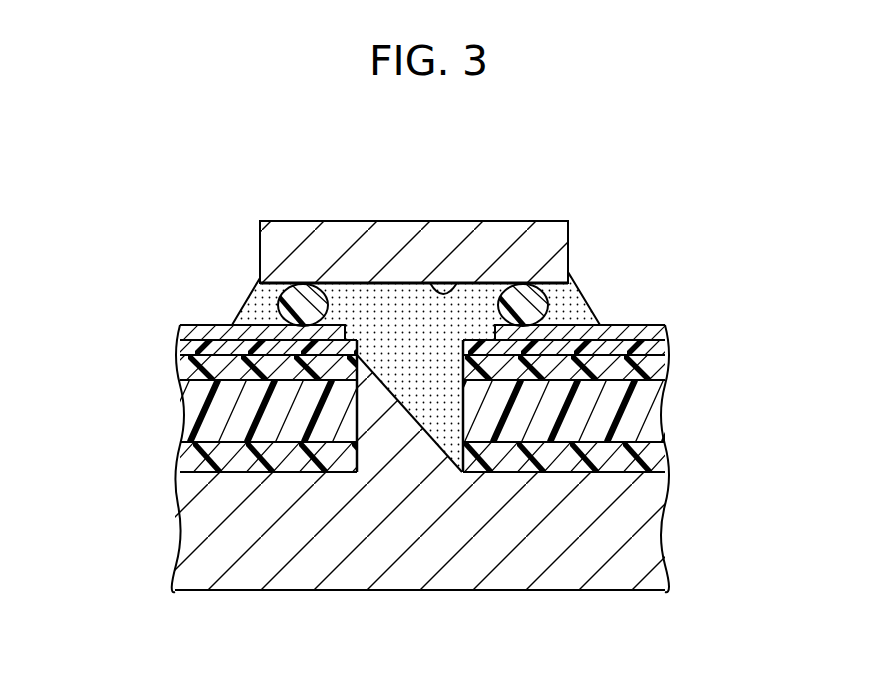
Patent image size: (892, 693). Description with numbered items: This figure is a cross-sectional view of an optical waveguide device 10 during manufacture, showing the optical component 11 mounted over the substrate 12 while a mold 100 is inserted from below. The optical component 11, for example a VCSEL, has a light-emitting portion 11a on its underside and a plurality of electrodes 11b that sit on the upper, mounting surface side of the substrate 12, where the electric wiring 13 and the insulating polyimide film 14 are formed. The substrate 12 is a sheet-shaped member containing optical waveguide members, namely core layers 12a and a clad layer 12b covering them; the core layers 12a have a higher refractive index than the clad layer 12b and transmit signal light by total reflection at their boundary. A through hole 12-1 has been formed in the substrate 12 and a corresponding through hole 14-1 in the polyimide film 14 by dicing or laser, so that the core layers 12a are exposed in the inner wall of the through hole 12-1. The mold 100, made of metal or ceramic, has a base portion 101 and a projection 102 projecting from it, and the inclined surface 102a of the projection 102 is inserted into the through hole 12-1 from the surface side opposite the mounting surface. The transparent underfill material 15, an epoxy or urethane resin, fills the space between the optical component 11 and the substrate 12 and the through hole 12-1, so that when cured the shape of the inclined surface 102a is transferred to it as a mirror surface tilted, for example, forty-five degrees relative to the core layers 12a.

The optical waveguide device 10 is at (149, 452).
The optical component 11 is at (570, 235).
The light-emitting portion 11a is at (457, 283).
The electrodes 11b is at (283, 300).
The underfill material 15 is at (250, 283).
The mold 100 is at (146, 547).
The base portion 101 is at (563, 577).
The projection 102 is at (355, 412).
The inclined surface 102a is at (435, 442).
The substrate 12 is at (777, 363).
The core layers 12a is at (640, 450).
The clad layer 12b is at (633, 443).
The through hole 12-1 is at (357, 428).
The electric wiring 13 is at (180, 325).
The polyimide film 14 is at (177, 347).
The through hole 14-1 is at (497, 327).